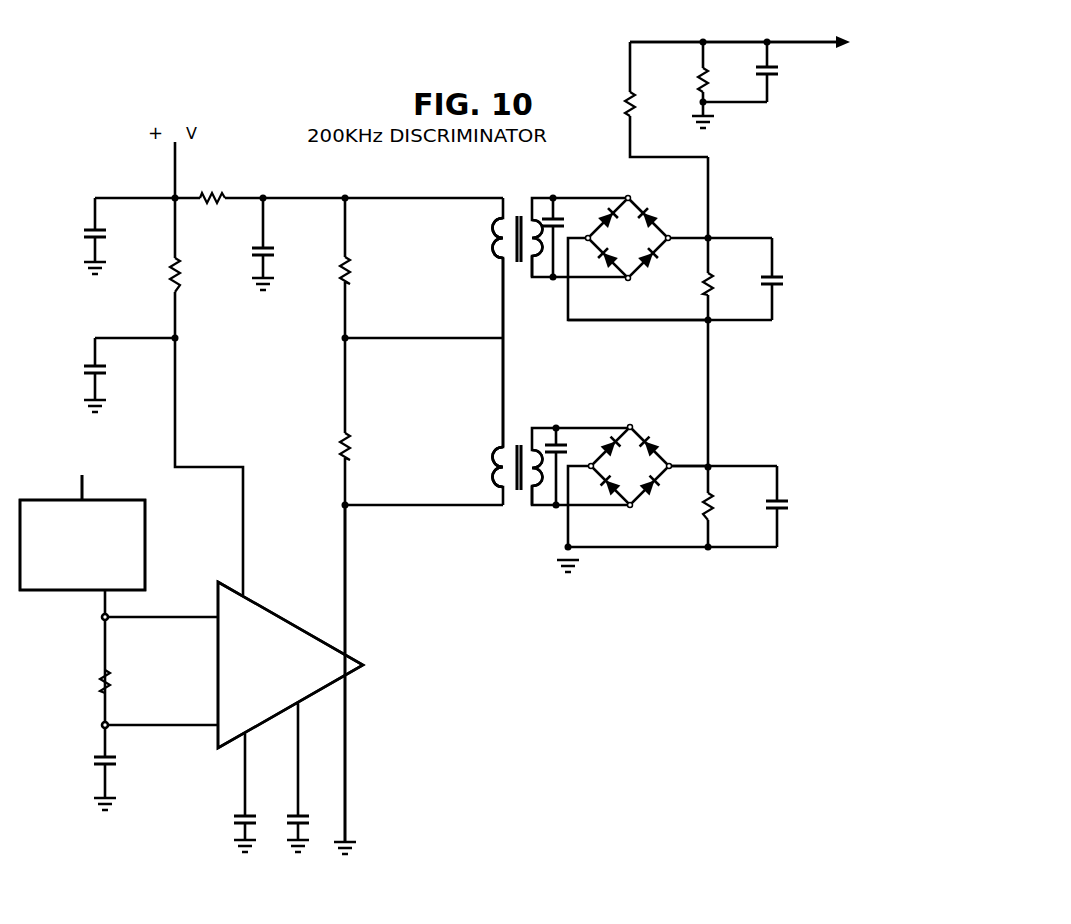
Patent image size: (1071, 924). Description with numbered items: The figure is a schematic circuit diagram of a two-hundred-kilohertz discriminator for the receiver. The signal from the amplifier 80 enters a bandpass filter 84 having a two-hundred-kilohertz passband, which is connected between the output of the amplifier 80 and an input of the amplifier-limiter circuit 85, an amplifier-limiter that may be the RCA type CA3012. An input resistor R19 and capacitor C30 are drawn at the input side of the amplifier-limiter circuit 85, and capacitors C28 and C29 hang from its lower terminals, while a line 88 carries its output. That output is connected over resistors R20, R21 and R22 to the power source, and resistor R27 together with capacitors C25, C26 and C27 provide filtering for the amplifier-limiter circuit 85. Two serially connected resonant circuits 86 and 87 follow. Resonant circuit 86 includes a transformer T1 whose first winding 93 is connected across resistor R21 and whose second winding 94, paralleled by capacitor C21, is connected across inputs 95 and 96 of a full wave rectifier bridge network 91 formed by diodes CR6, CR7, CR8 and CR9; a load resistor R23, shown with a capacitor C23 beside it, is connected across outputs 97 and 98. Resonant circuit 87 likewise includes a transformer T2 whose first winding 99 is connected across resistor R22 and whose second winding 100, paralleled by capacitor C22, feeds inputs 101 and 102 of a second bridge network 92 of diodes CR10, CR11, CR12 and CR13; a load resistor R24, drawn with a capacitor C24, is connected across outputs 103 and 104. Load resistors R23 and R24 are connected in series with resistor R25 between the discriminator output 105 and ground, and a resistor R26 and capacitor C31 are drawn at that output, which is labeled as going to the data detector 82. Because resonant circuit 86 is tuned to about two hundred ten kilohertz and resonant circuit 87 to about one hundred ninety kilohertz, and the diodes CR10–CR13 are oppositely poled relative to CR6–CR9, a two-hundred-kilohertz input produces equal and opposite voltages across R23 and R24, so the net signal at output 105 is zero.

The resistor R22 is at (239, 206).
The resistor R27 is at (183, 272).
The resistor R21 is at (353, 262).
The resistor R20 is at (353, 450).
The resistor R19 is at (112, 690).
The load resistor R23 is at (713, 283).
The load resistor R24 is at (714, 510).
The resistor R25 is at (630, 106).
The resistor R26 is at (702, 84).
The capacitor C25 is at (113, 231).
The capacitor C26 is at (116, 381).
The capacitor C27 is at (275, 259).
The capacitor C30 is at (122, 772).
The capacitor C28 is at (224, 811).
The capacitor C29 is at (291, 818).
The capacitor C21 is at (555, 191).
The capacitor C22 is at (556, 425).
The capacitor C23 is at (779, 289).
The capacitor C24 is at (786, 512).
The capacitor C31 is at (779, 82).
The transformer T1 is at (525, 194).
The transformer T2 is at (528, 422).
The first winding 93 is at (498, 245).
The second winding 94 is at (523, 267).
The resonant circuit 86 is at (496, 285).
The resonant circuit 87 is at (494, 424).
The first winding 99 is at (497, 477).
The second winding 100 is at (525, 494).
The diode CR6 is at (602, 207).
The diode CR7 is at (606, 271).
The diode CR8 is at (663, 263).
The diode CR9 is at (658, 212).
The diode CR10 is at (606, 432).
The diode CR11 is at (605, 490).
The diode CR12 is at (662, 496).
The diode CR13 is at (655, 442).
The input 95 is at (627, 197).
The input 96 is at (628, 293).
The output 97 is at (668, 238).
The output 98 is at (584, 252).
The full wave rectifier bridge network 91 is at (630, 328).
The full wave rectifier bridge network 92 is at (647, 394).
The input 101 is at (637, 408).
The input 102 is at (631, 520).
The output 103 is at (671, 465).
The output 104 is at (588, 451).
The output 105 is at (745, 42).
The data detector 82 is at (845, 95).
The amplifier 80 is at (72, 468).
The bandpass filter 84 is at (148, 579).
The amplifier-limiter circuit 85 is at (290, 618).
The amplifier output line 88 is at (348, 598).